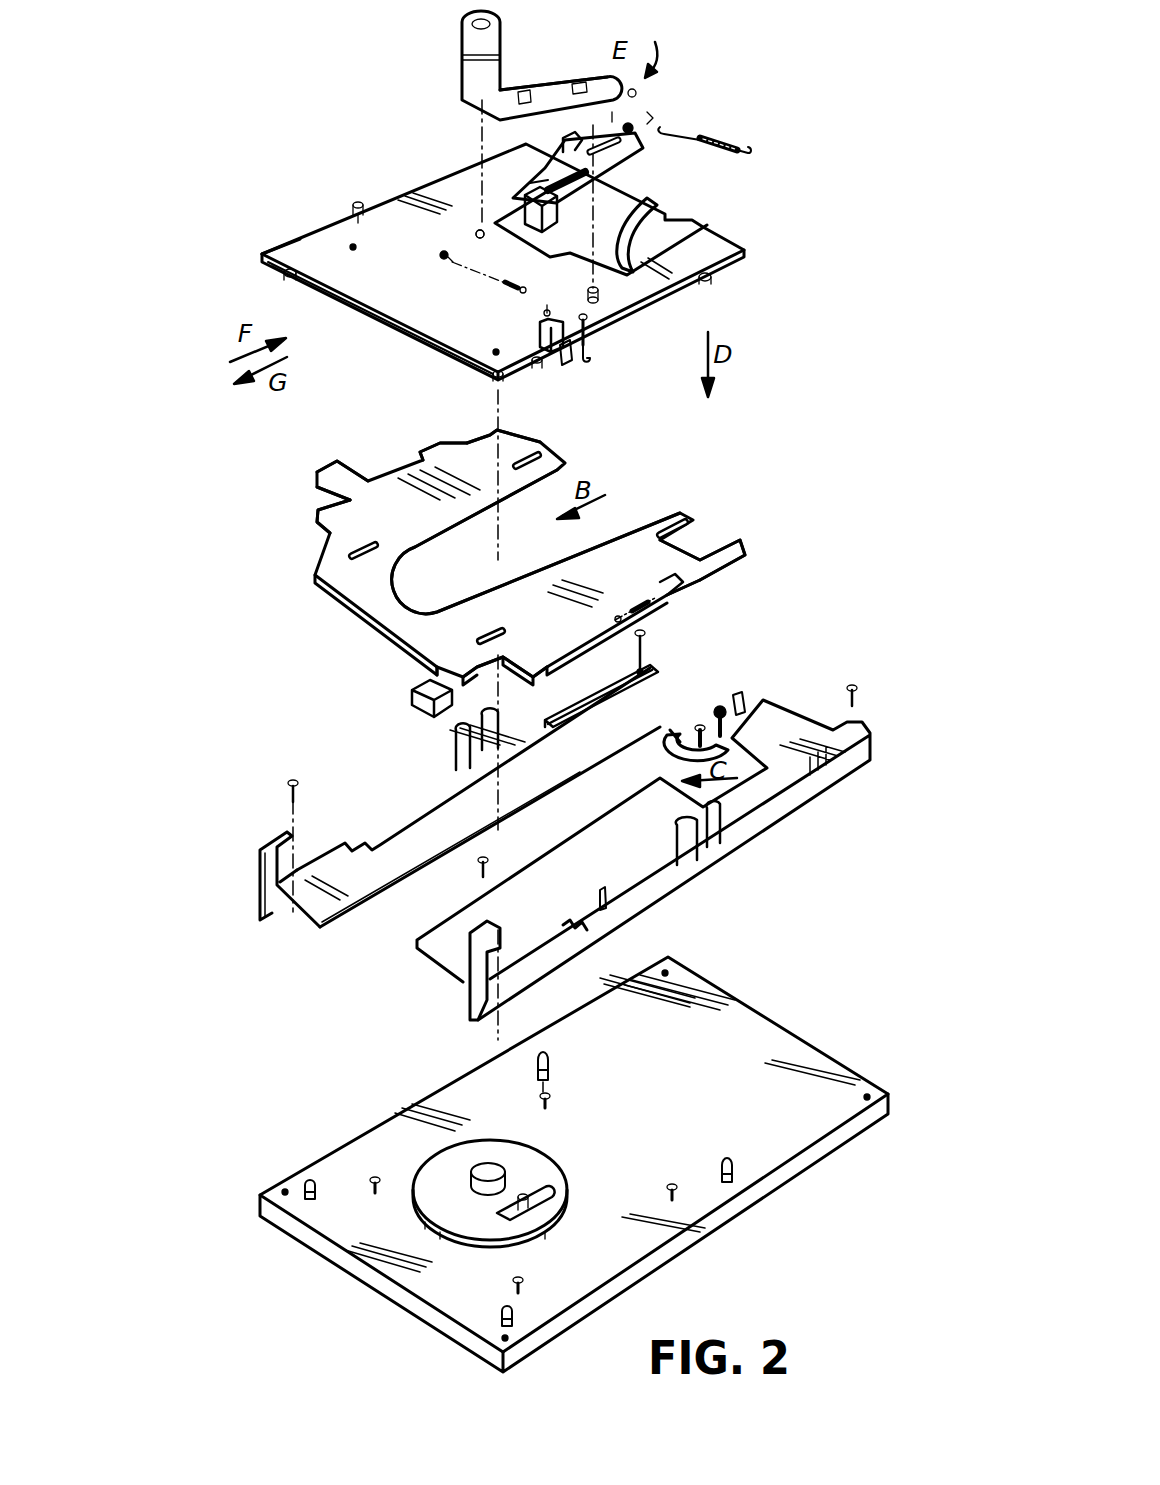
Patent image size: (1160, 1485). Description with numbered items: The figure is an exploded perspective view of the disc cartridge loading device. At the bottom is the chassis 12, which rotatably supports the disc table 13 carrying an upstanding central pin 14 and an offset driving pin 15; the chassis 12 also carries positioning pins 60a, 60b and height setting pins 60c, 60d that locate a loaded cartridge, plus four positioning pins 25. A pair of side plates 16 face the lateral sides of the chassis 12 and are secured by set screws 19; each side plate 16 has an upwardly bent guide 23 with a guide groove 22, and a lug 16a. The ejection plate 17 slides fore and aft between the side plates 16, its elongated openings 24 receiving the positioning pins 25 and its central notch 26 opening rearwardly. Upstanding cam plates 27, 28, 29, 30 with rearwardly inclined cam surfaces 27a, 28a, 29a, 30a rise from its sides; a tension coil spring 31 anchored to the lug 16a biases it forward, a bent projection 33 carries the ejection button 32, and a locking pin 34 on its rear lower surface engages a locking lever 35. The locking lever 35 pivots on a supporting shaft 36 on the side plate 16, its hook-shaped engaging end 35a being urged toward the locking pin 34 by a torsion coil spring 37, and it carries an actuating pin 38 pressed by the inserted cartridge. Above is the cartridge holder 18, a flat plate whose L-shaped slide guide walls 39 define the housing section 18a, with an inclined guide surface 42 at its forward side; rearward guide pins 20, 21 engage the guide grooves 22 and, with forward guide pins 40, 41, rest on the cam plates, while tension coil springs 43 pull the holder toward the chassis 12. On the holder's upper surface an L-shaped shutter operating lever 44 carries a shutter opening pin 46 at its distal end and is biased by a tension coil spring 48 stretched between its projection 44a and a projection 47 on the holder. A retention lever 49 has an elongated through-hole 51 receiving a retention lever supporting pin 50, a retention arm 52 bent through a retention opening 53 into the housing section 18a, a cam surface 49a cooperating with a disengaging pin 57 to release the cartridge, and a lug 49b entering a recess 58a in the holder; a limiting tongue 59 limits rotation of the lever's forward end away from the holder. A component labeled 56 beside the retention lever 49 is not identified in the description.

The chassis 12 is at (720, 1248).
The disc table 13 is at (540, 1160).
The central pin 14 is at (487, 1166).
The driving pin 15 is at (530, 1208).
The side plates 16 is at (660, 900).
The lug 16a is at (604, 912).
The ejection plate 17 is at (360, 612).
The cartridge holder 18 is at (425, 195).
The housing section 18a is at (405, 332).
The set screws 19 is at (645, 640).
The guide pin 20 is at (483, 168).
The guide pin 21 is at (712, 280).
The guide groove 22 is at (722, 845).
The guides 23 is at (690, 862).
The elongated openings 24 is at (660, 530).
The positioning pins 25 is at (540, 1095).
The central notch 26 is at (418, 600).
The cam plate 27 is at (317, 514).
The cam surface 27a is at (316, 480).
The cam plate 28 is at (430, 452).
The cam surface 28a is at (490, 436).
The cam plate 29 is at (537, 676).
The cam surface 29a is at (580, 690).
The cam plate 30 is at (675, 590).
The cam surface 30a is at (705, 580).
The tension coil spring 31 is at (650, 610).
The ejection button 32 is at (412, 700).
The bent projection 33 is at (435, 670).
The locking pin 34 is at (700, 535).
The locking lever 35 is at (668, 750).
The hook-shaped engaging end 35a is at (670, 732).
The supporting shaft 36 is at (717, 706).
The torsion coil spring 37 is at (741, 692).
The actuating pin 38 is at (698, 726).
The L-shaped slide guide walls 39 is at (492, 376).
The guide pin 40 is at (313, 235).
The guide pin 41 is at (536, 368).
The inclined guide surface 42 is at (355, 296).
The tension coil springs 43 is at (590, 340).
The shutter operating lever 44 is at (490, 58).
The projection 44a is at (538, 88).
The shutter opening pin 46 is at (636, 90).
The projection 47 is at (440, 258).
The tension coil spring 48 is at (505, 286).
The retention lever 49 is at (598, 165).
The cam surface 49a is at (542, 176).
The lug 49b is at (565, 136).
The retention lever supporting pin 50 is at (600, 297).
The elongated through-hole 51 is at (634, 126).
The retention arm 52 is at (548, 225).
The retention opening 53 is at (566, 366).
The spring 56 is at (727, 142).
The disengaging pin 57 is at (549, 305).
The recess 58a is at (540, 326).
The limiting tongue 59 is at (588, 362).
The positioning pin 60a is at (542, 1052).
The positioning pin 60b is at (730, 1160).
The height setting pin 60c is at (308, 1180).
The height setting pin 60d is at (502, 1312).